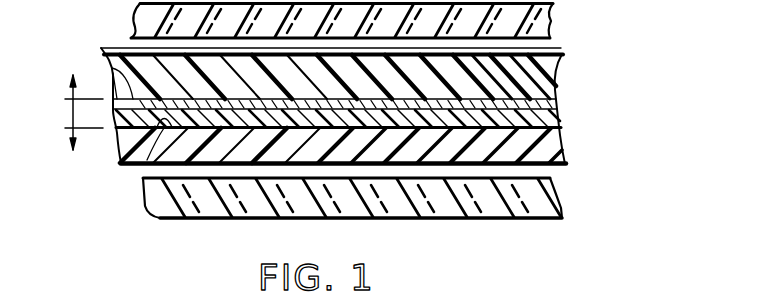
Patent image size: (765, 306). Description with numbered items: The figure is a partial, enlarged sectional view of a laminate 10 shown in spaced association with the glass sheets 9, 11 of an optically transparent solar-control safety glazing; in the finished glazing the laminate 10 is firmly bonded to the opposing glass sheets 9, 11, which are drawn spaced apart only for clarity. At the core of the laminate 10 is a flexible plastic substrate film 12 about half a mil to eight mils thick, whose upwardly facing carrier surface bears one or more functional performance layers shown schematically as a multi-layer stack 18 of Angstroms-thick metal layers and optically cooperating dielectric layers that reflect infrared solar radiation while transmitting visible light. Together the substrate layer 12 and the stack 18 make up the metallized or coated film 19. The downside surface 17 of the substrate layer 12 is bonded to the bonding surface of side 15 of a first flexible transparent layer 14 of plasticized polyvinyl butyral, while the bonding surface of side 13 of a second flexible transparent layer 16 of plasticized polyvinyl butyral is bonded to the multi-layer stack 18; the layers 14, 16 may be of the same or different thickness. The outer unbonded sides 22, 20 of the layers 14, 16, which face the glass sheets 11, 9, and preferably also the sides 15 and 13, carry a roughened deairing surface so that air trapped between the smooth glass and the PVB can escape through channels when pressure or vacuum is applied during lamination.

The glass sheet 9 is at (553, 10).
The laminate 10 is at (360, 123).
The glass sheet 11 is at (143, 195).
The film 12 is at (560, 118).
The side 13 is at (112, 68).
The first flexible transparent layer 14 is at (566, 155).
The side 15 is at (143, 167).
The second flexible transparent layer 16 is at (556, 62).
The downside surface 17 is at (122, 154).
The multi-layer stack 18 is at (557, 100).
The metallized film 19 is at (72, 113).
The unbonded side 20 is at (126, 54).
The unbonded side 22 is at (557, 168).